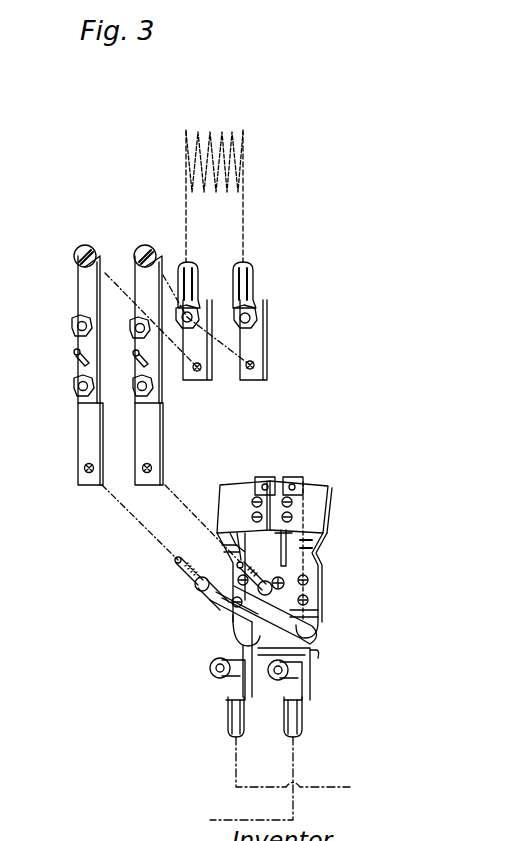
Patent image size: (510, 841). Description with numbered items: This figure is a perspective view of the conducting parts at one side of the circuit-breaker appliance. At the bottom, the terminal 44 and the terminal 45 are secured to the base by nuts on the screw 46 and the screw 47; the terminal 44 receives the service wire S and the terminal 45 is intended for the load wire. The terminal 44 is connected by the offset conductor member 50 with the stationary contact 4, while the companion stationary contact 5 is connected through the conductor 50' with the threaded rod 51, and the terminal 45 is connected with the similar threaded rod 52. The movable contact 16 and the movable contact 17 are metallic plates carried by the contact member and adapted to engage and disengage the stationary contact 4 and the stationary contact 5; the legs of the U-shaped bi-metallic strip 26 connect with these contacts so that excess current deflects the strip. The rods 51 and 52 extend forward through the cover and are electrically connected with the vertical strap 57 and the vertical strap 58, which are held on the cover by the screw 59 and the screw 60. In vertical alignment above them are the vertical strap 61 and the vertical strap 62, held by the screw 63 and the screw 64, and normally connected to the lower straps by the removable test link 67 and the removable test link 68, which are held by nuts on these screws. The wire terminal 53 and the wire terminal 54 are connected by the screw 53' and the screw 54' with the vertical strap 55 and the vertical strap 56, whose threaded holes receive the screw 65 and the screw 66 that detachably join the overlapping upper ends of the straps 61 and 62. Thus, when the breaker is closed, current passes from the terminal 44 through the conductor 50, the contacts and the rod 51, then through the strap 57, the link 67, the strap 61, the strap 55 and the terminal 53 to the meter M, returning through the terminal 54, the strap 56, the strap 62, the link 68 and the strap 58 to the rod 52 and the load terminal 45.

The meter M is at (245, 130).
The screw 66 is at (82, 250).
The vertical strap 62 is at (78, 285).
The screw 64 is at (76, 320).
The test link 68 is at (74, 353).
The screw 60 is at (74, 386).
The vertical strap 58 is at (88, 422).
The screw 65 is at (141, 250).
The vertical strap 61 is at (156, 252).
The screw 63 is at (136, 320).
The screw 59 is at (134, 372).
The test link 67 is at (160, 376).
The vertical strap 57 is at (150, 428).
The wire terminal 54 is at (202, 278).
The screw 54' is at (197, 305).
The vertical strap 56 is at (205, 380).
The wire terminal 53 is at (262, 283).
The screw 53' is at (272, 316).
The vertical strap 55 is at (268, 380).
The movable contact 16 is at (235, 500).
The movable contact 17 is at (310, 490).
The stationary contact 5 is at (318, 543).
The bi-metallic strip 26 is at (276, 548).
The stationary contact 4 is at (220, 548).
The threaded rod 52 is at (215, 600).
The offset conductor member 50 is at (242, 604).
The threaded rod 51 is at (318, 620).
The conductor 50' is at (325, 602).
The screw 47 is at (212, 670).
The terminal 45 is at (230, 717).
The screw 46 is at (292, 670).
The terminal 44 is at (303, 712).
The service wire S is at (222, 820).